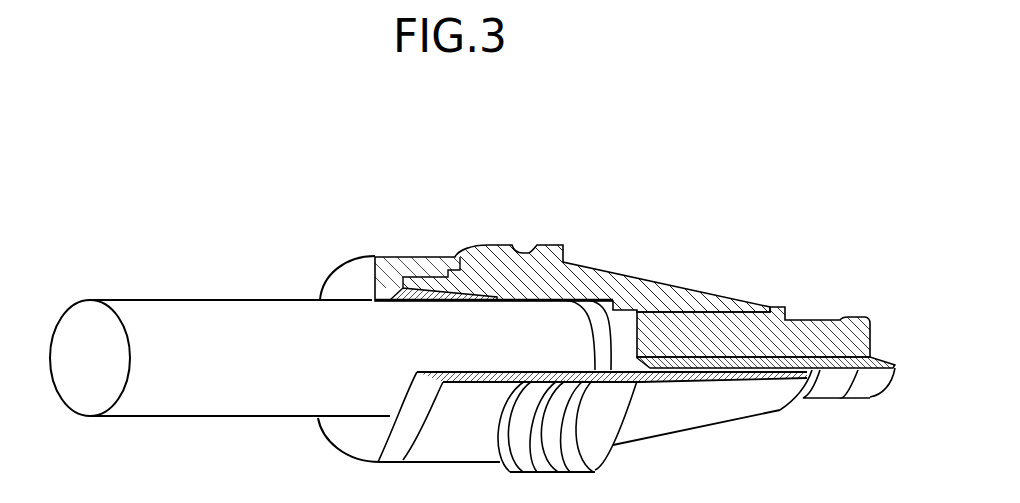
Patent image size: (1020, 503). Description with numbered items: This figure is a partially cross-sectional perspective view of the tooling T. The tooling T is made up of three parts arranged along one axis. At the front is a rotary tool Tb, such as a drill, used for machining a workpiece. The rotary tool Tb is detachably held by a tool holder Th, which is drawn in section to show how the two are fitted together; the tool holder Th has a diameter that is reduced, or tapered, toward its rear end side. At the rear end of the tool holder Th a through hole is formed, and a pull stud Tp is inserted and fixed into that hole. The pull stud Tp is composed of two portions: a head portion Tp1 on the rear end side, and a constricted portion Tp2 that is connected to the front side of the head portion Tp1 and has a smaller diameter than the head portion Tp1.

The tooling T is at (743, 183).
The rotary tool Tb is at (260, 312).
The tool holder Th is at (578, 282).
The pull stud Tp is at (766, 327).
The head portion Tp1 is at (872, 397).
The constricted portion Tp2 is at (828, 388).